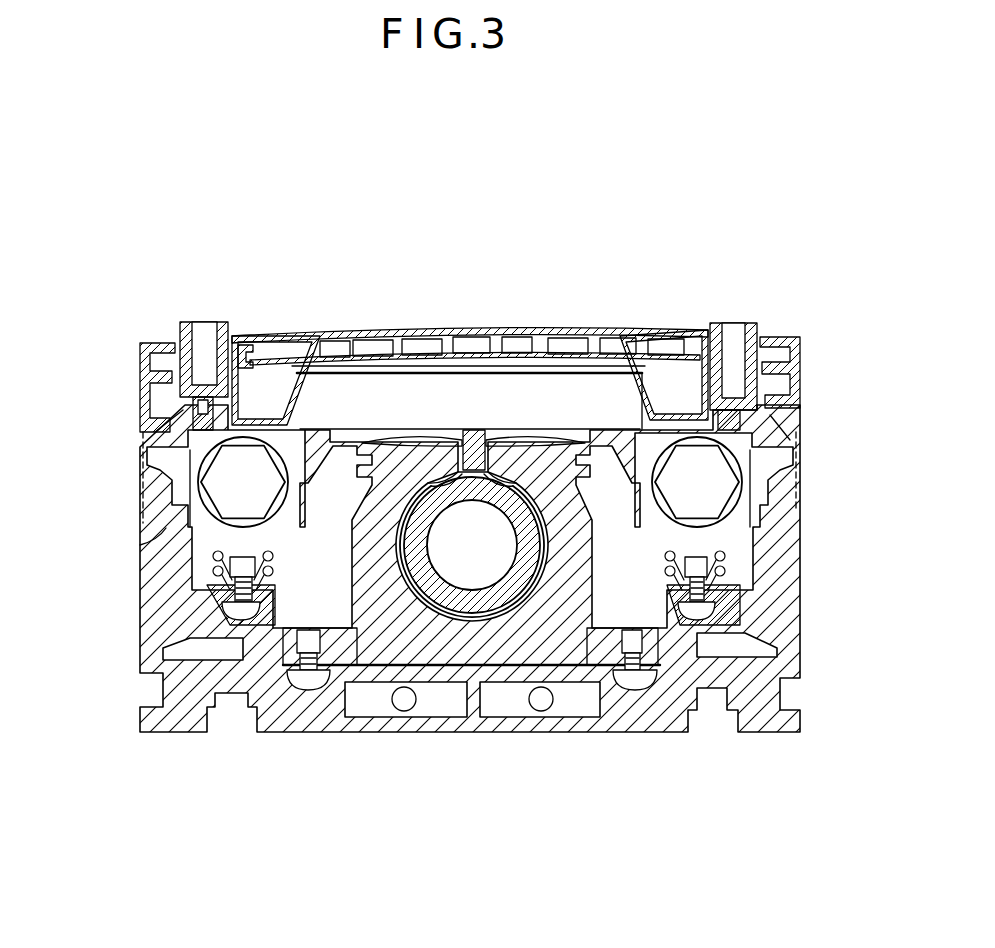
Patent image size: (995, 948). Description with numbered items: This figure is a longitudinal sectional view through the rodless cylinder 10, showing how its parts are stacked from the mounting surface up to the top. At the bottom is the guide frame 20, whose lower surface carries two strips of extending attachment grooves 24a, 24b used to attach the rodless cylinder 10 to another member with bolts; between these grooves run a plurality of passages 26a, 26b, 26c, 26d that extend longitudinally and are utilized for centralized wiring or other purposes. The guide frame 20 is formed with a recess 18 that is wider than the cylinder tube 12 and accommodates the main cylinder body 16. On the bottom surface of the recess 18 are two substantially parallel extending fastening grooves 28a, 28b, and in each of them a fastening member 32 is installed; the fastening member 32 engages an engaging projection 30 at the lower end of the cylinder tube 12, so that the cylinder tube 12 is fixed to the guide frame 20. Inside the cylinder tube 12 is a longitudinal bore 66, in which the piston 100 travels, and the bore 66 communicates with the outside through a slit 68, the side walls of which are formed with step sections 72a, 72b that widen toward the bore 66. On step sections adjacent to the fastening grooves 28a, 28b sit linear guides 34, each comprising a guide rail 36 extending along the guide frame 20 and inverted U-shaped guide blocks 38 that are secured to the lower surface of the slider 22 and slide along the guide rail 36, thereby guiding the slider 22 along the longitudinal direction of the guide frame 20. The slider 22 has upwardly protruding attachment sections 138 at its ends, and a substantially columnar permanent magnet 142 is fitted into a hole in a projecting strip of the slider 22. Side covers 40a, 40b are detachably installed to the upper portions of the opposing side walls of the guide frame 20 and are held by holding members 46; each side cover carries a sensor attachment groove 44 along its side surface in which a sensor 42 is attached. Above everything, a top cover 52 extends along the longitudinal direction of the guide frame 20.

The rodless cylinder 10 is at (870, 225).
The cylinder tube 12 is at (578, 508).
The main cylinder body 16 is at (604, 540).
The recess 18 is at (452, 640).
The guide frame 20 is at (808, 598).
The slider 22 is at (557, 400).
The extending attachment groove 24a is at (232, 735).
The extending attachment groove 24b is at (735, 735).
The passage 26a is at (365, 735).
The passage 26b is at (445, 735).
The passage 26c is at (512, 735).
The passage 26d is at (575, 735).
The extending fastening groove 28a is at (272, 735).
The extending fastening groove 28b is at (652, 735).
The engaging projection 30 is at (318, 690).
The fastening member 32 is at (300, 650).
The linear guide 34 is at (733, 552).
The guide rail 36 is at (236, 612).
The guide block 38 is at (226, 566).
The side cover 40a is at (148, 390).
The side cover 40b is at (805, 348).
The sensor 42 is at (770, 418).
The sensor attachment groove 44 is at (140, 446).
The holding member 46 is at (152, 484).
The top cover 52 is at (482, 432).
The bore 66 is at (478, 626).
The slit 68 is at (490, 470).
The step section 72a is at (463, 445).
The step section 72b is at (487, 447).
The piston 100 is at (540, 712).
The attachment section 138 is at (226, 322).
The permanent magnet 142 is at (806, 350).